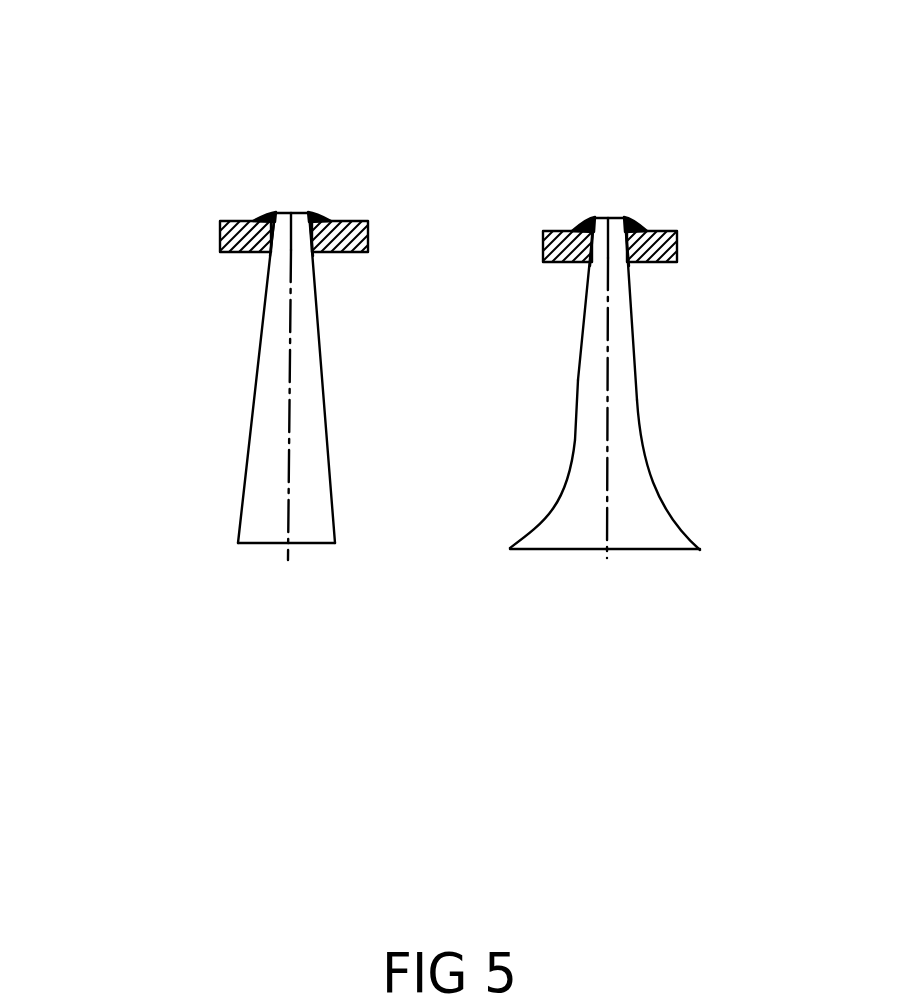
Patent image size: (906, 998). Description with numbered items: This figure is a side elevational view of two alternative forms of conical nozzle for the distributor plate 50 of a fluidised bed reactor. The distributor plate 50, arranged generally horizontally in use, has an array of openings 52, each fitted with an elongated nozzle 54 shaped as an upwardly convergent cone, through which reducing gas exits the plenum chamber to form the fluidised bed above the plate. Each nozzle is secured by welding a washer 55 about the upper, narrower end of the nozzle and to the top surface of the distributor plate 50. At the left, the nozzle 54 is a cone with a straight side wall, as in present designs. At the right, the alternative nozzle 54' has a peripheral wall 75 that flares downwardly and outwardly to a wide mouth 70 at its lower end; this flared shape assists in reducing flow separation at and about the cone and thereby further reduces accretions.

The distributor plate 50 is at (182, 232).
The opening 52 is at (270, 256).
The nozzle 54 is at (192, 386).
The nozzle 54' is at (678, 388).
The washer 55 is at (272, 218).
The mouth 70 is at (658, 552).
The peripheral wall 75 is at (668, 508).